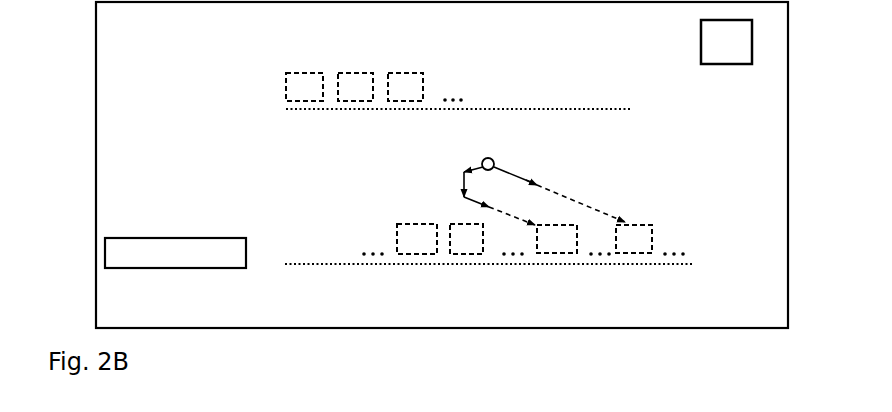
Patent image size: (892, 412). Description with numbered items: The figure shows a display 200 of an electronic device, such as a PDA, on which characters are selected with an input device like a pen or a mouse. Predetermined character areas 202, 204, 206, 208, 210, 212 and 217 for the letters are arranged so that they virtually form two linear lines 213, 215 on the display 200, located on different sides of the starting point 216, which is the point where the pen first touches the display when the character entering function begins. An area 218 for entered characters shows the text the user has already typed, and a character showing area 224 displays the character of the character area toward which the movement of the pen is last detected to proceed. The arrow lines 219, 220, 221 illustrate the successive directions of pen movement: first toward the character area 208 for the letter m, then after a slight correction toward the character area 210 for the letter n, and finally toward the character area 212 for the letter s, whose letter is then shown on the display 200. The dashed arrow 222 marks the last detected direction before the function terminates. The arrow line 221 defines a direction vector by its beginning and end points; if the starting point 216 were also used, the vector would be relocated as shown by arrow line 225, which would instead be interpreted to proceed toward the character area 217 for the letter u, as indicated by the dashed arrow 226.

The display 200 is at (96, 123).
The character area 202 is at (287, 73).
The character area 204 is at (348, 73).
The character area 206 is at (410, 73).
The character area 208 is at (400, 265).
The character area 210 is at (463, 265).
The character area 212 is at (543, 266).
The linear line 213 is at (361, 109).
The linear line 215 is at (355, 266).
The starting point 216 is at (495, 161).
The character area 217 is at (641, 265).
The area for entered characters 218 is at (140, 268).
The arrow line 219 is at (485, 158).
The arrow line 220 is at (461, 185).
The arrow line 221 is at (478, 206).
The dashed arrow 222 is at (516, 216).
The character showing area 224 is at (738, 64).
The arrow line 225 is at (537, 180).
The dashed arrow 226 is at (561, 194).